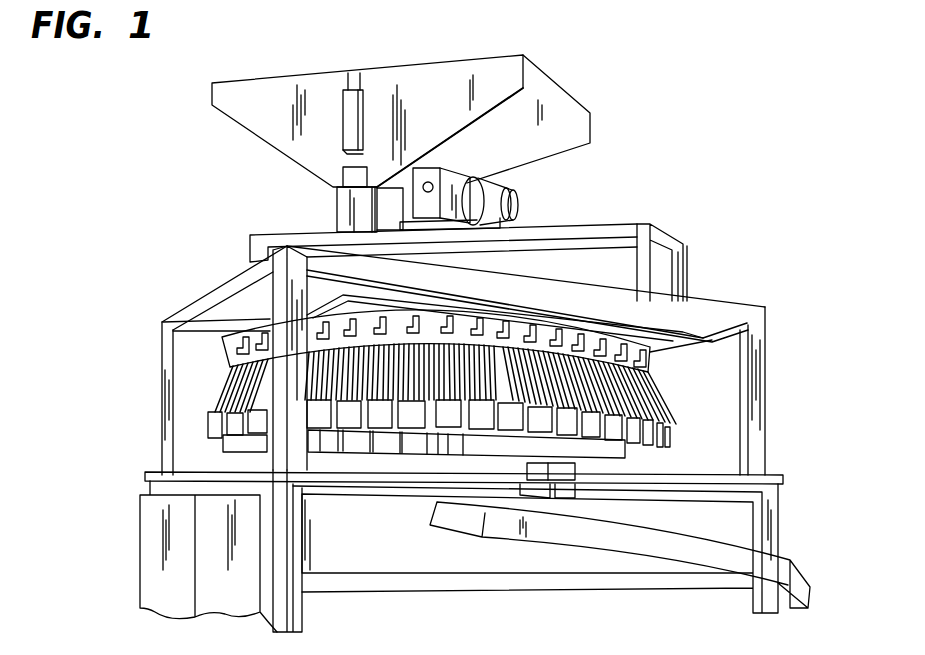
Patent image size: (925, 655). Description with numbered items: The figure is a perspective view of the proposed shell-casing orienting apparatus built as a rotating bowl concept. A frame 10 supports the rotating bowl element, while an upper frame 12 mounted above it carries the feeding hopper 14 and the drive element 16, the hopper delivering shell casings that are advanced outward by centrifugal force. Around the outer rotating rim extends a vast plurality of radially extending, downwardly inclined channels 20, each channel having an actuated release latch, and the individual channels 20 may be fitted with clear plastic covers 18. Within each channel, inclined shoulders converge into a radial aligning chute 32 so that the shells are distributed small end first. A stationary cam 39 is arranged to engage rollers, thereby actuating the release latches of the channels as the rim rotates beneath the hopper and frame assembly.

The frame 10 is at (764, 392).
The upper frame 12 is at (638, 231).
The feeding hopper 14 is at (511, 68).
The drive element 16 is at (463, 188).
The clear plastic covers 18 is at (435, 395).
The channels 20 is at (455, 418).
The radial aligning chute 32 is at (389, 388).
The stationary cam 39 is at (674, 341).